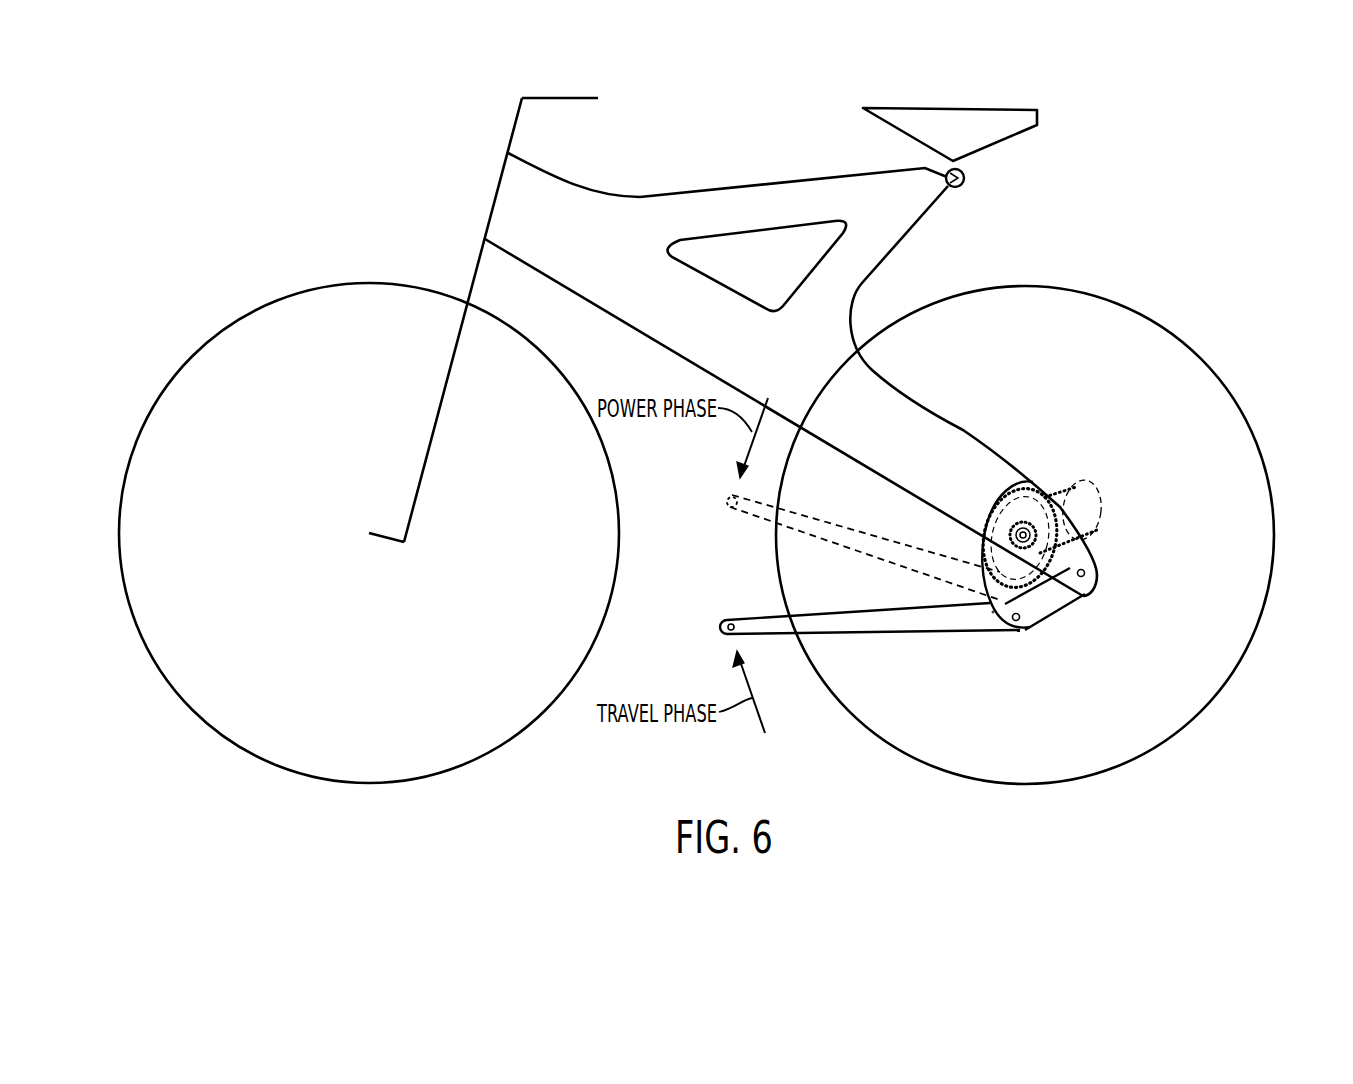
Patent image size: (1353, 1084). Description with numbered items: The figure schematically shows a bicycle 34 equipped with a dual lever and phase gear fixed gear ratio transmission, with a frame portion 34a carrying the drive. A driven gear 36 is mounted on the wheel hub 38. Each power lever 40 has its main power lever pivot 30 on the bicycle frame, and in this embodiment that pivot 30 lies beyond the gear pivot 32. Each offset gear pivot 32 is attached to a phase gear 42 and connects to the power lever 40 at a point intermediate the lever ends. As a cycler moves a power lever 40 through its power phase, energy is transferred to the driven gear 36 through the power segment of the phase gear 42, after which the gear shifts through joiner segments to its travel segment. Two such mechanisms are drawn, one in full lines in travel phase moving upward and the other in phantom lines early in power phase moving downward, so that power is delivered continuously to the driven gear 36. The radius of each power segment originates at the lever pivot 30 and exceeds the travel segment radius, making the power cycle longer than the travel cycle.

The main power lever pivot 30 is at (1085, 573).
The gear pivot 32 is at (993, 620).
The bicycle 34 is at (1101, 244).
The rear frame portion 34a is at (863, 285).
The driven gear 36 is at (1018, 522).
The wheel hub 38 is at (1040, 560).
The power lever 40 is at (725, 501).
The phase gear 42 is at (1032, 484).